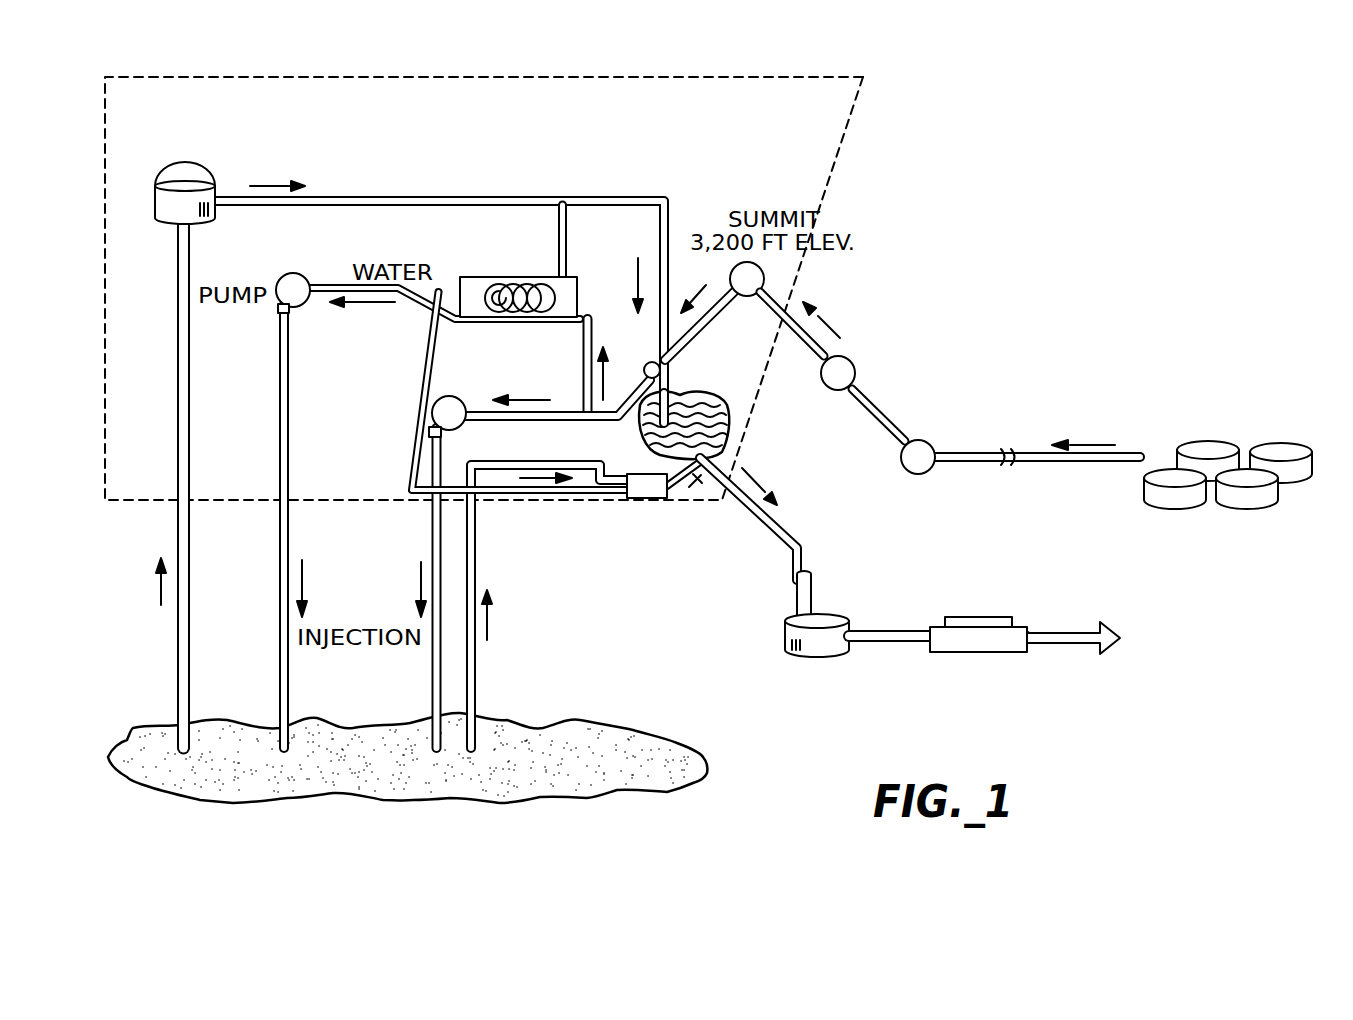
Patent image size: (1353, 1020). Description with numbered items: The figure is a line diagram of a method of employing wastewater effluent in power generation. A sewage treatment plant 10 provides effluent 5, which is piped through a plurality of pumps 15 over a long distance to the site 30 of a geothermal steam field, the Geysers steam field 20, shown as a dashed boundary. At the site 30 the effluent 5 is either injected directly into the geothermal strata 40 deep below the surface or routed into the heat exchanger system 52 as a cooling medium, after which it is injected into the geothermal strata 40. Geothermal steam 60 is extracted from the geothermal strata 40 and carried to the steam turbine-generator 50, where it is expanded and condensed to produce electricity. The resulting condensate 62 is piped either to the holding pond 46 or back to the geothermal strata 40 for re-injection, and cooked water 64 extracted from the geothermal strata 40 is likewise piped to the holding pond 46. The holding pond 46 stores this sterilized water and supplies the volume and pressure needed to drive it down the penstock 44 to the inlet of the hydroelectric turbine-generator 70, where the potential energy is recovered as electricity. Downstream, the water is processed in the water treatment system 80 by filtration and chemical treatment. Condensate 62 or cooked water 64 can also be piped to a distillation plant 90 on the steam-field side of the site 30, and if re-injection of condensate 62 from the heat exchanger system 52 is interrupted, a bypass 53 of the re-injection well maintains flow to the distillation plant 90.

The effluent 5 is at (498, 384).
The sewage treatment plant 10 is at (1228, 525).
The pumps 15 is at (950, 383).
The Geysers steam field 20 is at (484, 264).
The site 30 is at (858, 144).
The geothermal strata 40 is at (412, 795).
The penstock 44 is at (812, 519).
The holding pond 46 is at (743, 435).
The steam turbine-generator 50 is at (284, 156).
The heat exchanger system 52 is at (508, 329).
The bypass 53 is at (428, 372).
The steam 60 is at (136, 484).
The condensate 62 is at (439, 289).
The cooked water 64 is at (549, 606).
The hydroelectric turbine-generator 70 is at (711, 607).
The water treatment system 80 is at (984, 680).
The distillation plant 90 is at (629, 504).